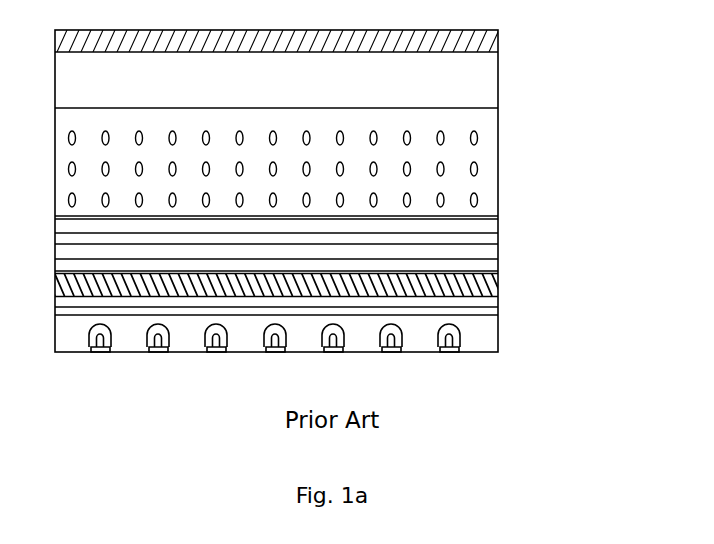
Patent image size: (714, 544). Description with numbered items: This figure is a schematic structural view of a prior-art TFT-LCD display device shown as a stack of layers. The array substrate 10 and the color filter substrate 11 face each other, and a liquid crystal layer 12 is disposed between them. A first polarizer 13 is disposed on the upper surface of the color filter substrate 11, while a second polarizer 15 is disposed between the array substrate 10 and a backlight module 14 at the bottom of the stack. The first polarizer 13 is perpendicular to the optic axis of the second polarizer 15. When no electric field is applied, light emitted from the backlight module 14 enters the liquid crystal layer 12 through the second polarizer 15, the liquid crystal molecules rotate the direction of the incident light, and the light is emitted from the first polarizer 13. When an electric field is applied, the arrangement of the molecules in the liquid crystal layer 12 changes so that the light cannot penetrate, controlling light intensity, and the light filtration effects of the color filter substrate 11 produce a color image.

The first polarizer 13 is at (486, 38).
The color filter substrate 11 is at (486, 81).
The liquid crystal layer 12 is at (486, 168).
The array substrate 10 is at (486, 250).
The second polarizer 15 is at (486, 285).
The backlight module 14 is at (486, 325).